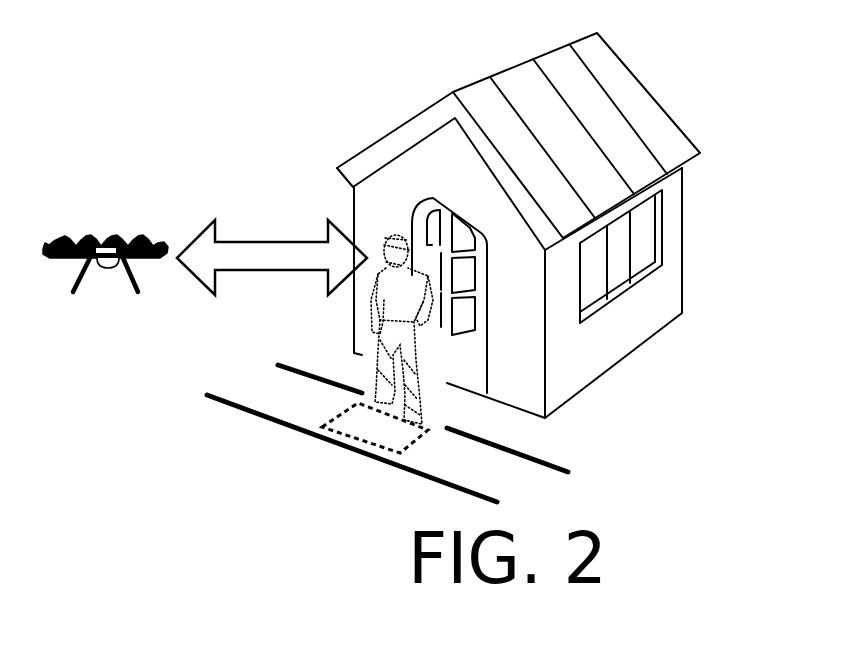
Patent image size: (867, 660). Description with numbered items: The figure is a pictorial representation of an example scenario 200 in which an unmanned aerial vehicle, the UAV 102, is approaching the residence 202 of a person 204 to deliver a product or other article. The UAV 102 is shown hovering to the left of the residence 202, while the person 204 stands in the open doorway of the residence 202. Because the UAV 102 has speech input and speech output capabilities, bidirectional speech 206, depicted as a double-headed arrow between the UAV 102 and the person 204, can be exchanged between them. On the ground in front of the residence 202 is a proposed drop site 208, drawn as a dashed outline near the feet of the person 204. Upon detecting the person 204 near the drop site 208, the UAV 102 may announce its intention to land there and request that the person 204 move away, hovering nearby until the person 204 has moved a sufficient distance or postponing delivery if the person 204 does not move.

The scenario 200 is at (122, 46).
The unmanned aerial vehicle 102 is at (112, 234).
The residence 202 is at (612, 63).
The person 204 is at (385, 292).
The bidirectional speech 206 is at (267, 250).
The drop site 208 is at (350, 425).